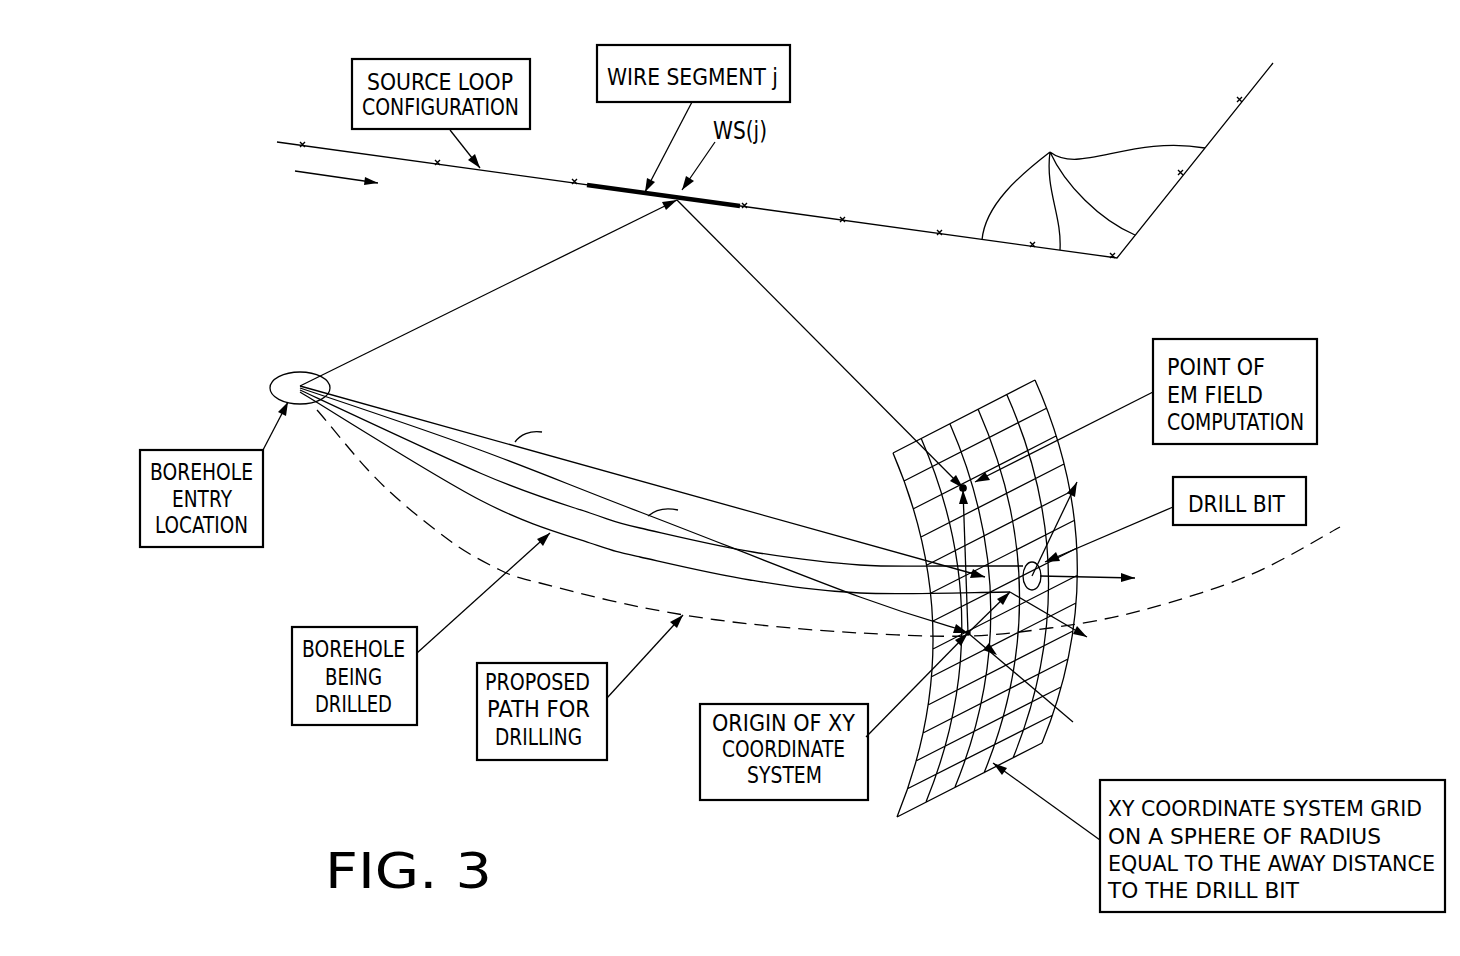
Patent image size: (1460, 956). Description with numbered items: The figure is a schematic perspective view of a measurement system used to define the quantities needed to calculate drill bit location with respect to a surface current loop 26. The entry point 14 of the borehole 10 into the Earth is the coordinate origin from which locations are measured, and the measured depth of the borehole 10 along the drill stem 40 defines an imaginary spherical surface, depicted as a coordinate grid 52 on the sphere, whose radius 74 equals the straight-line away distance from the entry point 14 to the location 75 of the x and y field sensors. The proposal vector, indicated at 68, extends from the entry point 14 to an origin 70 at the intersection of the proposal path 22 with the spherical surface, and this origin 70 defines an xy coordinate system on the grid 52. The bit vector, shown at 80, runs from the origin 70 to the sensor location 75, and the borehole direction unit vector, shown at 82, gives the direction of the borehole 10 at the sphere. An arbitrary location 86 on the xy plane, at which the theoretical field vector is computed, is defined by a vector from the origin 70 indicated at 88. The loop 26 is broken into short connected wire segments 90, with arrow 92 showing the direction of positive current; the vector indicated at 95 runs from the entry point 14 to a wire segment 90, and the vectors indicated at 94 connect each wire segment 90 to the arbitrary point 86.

The borehole 10 is at (442, 487).
The entry point 14 is at (330, 378).
The proposal path 22 is at (368, 475).
The surface current loop 26 is at (878, 223).
The drill stem 40 is at (510, 507).
The XY coordinate system grid on sphere 52 is at (978, 407).
The vector Rprop 68 is at (610, 497).
The origin 70 is at (968, 633).
The radius 74 is at (685, 493).
The location of the x and y field sensors 75 is at (1047, 560).
The vector Rbit 80 is at (1030, 665).
The unit vector nuv 82 is at (1087, 577).
The arbitrary location 86 is at (960, 490).
The vector R 88 is at (965, 535).
The wire segments 90 is at (1093, 187).
The arrow 92 is at (317, 177).
The vectors Rwsxy(j) 94 is at (770, 296).
The vector Rws(j) 95 is at (502, 285).